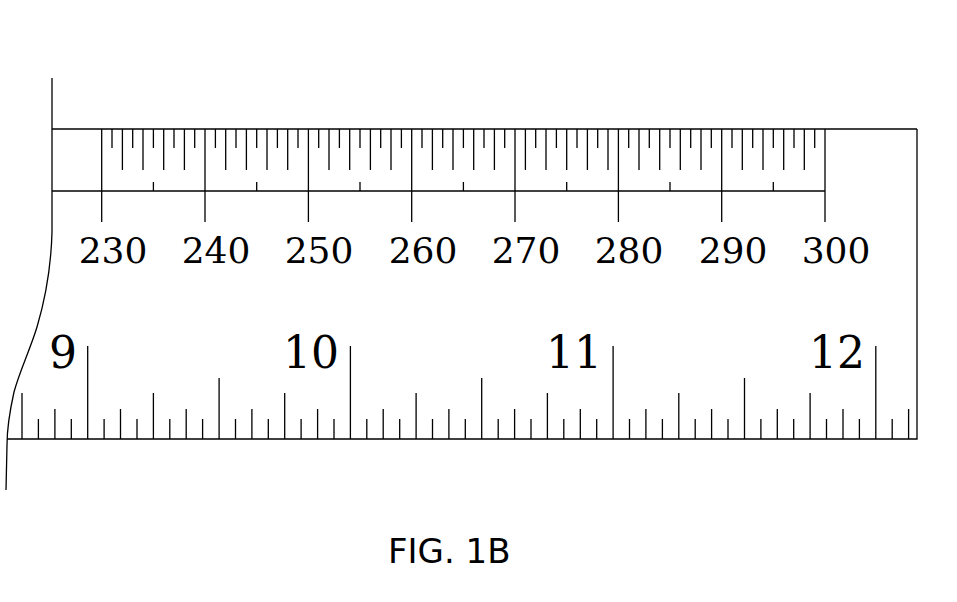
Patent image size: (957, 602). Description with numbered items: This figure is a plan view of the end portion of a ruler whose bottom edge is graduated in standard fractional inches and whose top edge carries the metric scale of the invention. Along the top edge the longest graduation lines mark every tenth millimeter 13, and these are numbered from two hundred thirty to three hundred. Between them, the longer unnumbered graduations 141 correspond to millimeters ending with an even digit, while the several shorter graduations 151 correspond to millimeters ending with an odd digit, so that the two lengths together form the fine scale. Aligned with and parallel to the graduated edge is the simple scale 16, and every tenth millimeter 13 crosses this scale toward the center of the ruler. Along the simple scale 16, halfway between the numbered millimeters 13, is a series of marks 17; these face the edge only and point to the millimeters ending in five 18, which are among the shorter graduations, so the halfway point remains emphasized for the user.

The tenth millimeter graduation 13 is at (206, 179).
The simple scale 16 is at (180, 190).
The marks 17 is at (775, 185).
The millimeter ending in five 18 is at (774, 140).
The longer unnumbered graduations 141 is at (324, 120).
The shorter graduations 151 is at (520, 120).